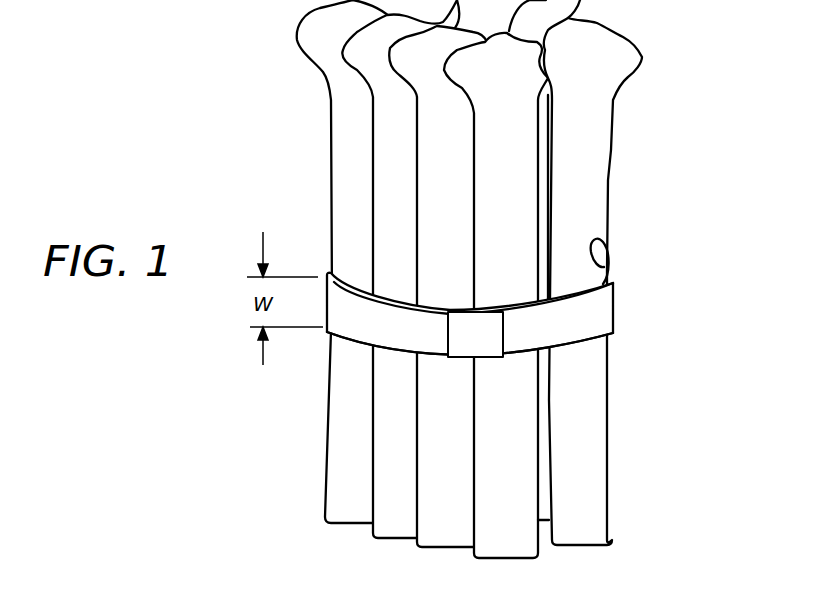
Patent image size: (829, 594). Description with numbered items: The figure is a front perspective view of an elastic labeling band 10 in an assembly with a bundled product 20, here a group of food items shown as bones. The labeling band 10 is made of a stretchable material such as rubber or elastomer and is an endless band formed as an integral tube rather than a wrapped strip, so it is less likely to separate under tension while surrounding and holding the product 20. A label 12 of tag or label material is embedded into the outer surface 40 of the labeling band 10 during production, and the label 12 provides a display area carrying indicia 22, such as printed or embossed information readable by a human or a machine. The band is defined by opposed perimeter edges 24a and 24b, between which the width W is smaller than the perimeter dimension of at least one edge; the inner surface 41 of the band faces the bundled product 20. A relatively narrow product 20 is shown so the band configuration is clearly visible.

The labeling band 10 is at (498, 325).
The label 12 is at (586, 364).
The product 20 is at (598, 125).
The indicia 22 is at (490, 347).
The perimeter edge 24a is at (360, 293).
The perimeter edge 24b is at (357, 343).
The outer surface 40 is at (397, 343).
The inner surface 41 is at (603, 233).